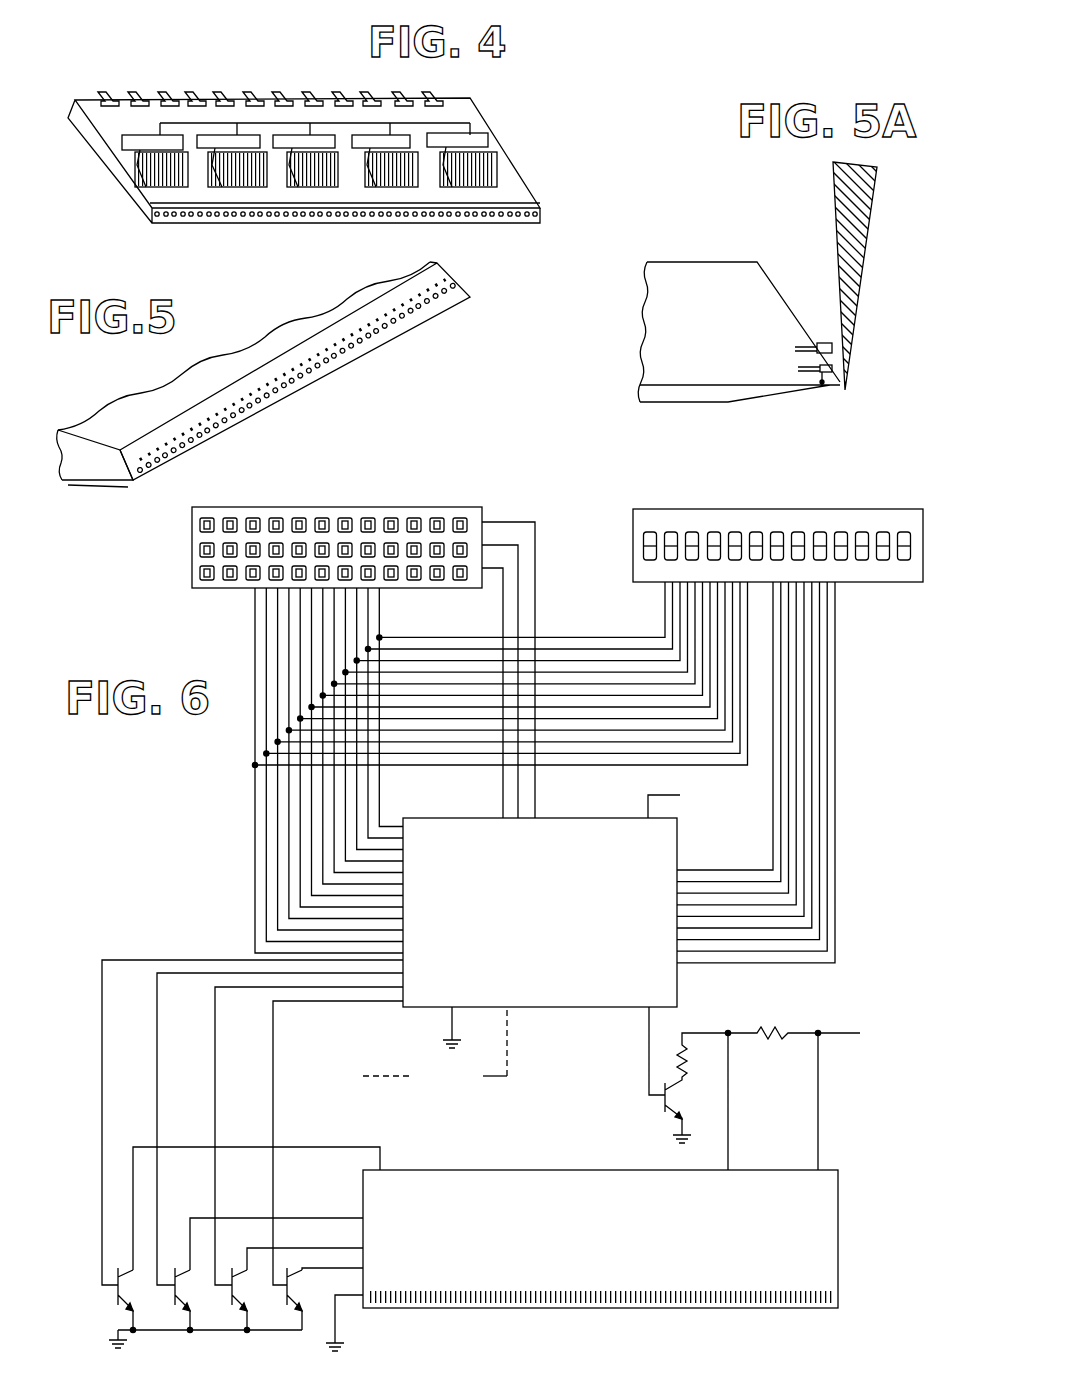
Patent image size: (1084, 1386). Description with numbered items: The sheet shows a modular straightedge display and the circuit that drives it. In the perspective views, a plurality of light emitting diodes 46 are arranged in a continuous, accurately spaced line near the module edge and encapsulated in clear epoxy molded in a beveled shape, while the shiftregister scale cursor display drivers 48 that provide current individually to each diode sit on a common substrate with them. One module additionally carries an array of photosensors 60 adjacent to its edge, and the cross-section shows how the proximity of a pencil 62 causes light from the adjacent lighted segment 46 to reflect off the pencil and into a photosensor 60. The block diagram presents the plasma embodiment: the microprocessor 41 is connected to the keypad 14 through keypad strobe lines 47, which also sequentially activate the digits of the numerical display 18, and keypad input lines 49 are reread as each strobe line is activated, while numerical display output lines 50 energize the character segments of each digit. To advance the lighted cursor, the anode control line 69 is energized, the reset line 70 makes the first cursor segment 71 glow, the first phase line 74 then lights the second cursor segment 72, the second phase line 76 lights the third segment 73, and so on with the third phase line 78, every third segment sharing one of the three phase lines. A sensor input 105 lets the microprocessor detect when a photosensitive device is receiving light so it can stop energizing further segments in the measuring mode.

In FIG. 6, the keypad 14 is at (455, 508).
In FIG. 6, the numerical display 18 is at (878, 508).
In FIG. 6, the microprocessor 41 is at (679, 985).
In FIG. 4, the light emitting diodes 46 is at (237, 216).
In FIG. 5, the light emitting diodes 46 is at (180, 478).
In FIG. 5A, the light emitting diodes 46 is at (822, 384).
In FIG. 6, the keypad strobe lines 47 is at (255, 833).
In FIG. 4, the shiftregister scale cursor display driver 48 is at (473, 143).
In FIG. 6, the keypad input lines 49 is at (538, 548).
In FIG. 6, the numerical display output lines 50 is at (840, 646).
In FIG. 5, the photosensors 60 is at (333, 375).
In FIG. 5A, the photosensors 60 is at (817, 345).
In FIG. 5A, the pencil 62 is at (867, 293).
In FIG. 6, the anode control line 69 is at (649, 1053).
In FIG. 6, the reset line 70 is at (160, 958).
In FIG. 6, the first cursor segment 71 is at (357, 1309).
In FIG. 6, the second cursor segment 72 is at (375, 1290).
In FIG. 6, the third segment 73 is at (378, 1309).
In FIG. 6, the first phase line 74 is at (192, 974).
In FIG. 6, the second phase line 76 is at (272, 987).
In FIG. 6, the third phase line 78 is at (355, 1002).
In FIG. 6, the sensor input 105 is at (483, 1077).